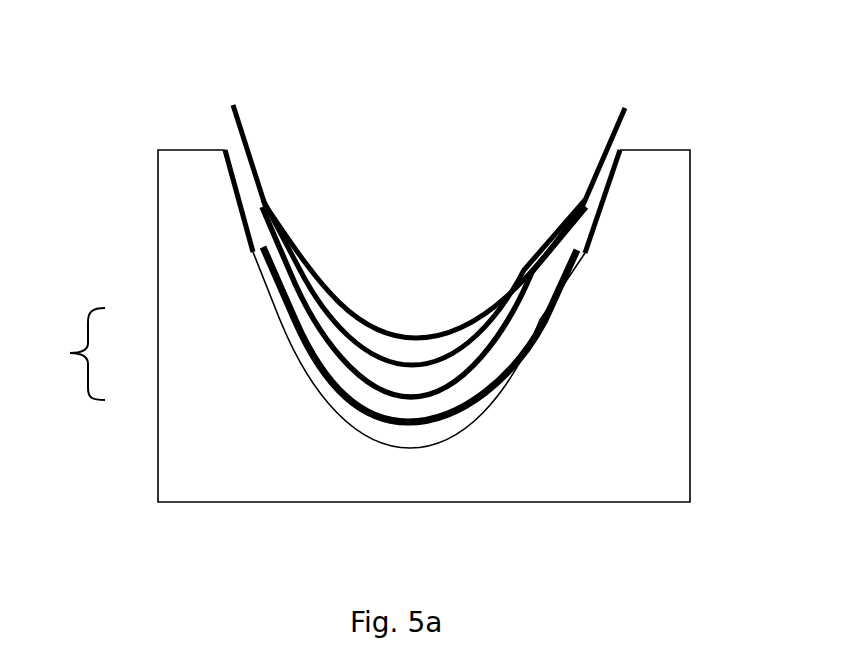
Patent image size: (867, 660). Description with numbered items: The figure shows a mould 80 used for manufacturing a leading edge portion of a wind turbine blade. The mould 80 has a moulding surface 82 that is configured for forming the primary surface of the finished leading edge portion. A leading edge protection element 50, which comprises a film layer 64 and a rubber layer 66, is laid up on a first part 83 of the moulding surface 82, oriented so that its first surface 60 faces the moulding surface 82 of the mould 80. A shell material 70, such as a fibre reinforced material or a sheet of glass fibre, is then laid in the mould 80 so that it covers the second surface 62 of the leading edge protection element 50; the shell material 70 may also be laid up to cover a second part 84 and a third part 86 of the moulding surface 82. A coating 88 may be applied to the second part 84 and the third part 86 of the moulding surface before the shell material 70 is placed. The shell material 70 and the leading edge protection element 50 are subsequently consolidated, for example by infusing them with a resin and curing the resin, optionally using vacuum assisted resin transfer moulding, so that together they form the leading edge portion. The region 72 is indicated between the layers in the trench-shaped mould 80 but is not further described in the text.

The leading edge protection element 50 is at (65, 354).
The first surface 60 is at (285, 310).
The second surface 62 is at (383, 405).
The film layer 64 is at (333, 402).
The rubber layer 66 is at (322, 368).
The shell material 70 is at (353, 147).
The inner region 72 is at (400, 348).
The mould 80 is at (653, 398).
The moulding surface 82 is at (542, 342).
The first part of the moulding surface 83 is at (453, 440).
The second part of the moulding surface 84 is at (600, 213).
The third part of the moulding surface 86 is at (250, 216).
The coating 88 is at (252, 216).